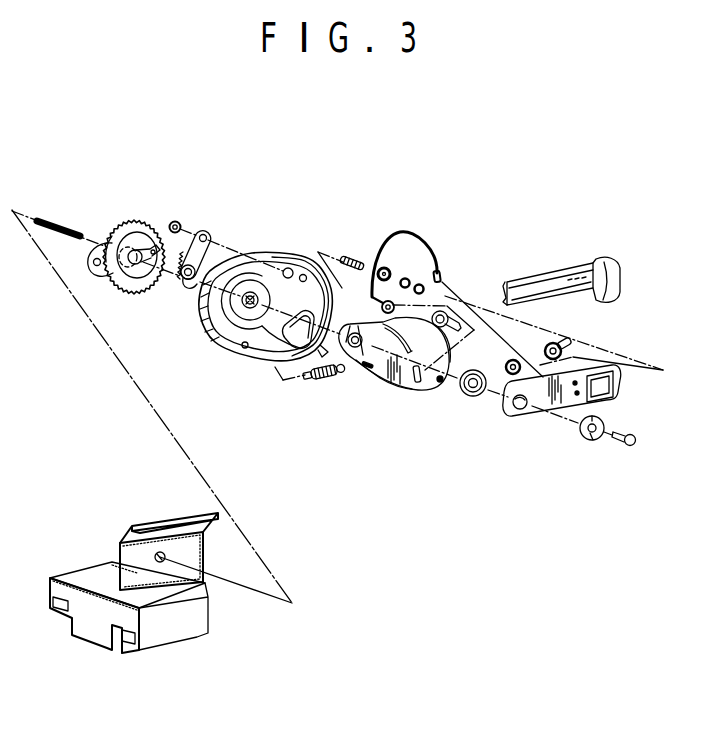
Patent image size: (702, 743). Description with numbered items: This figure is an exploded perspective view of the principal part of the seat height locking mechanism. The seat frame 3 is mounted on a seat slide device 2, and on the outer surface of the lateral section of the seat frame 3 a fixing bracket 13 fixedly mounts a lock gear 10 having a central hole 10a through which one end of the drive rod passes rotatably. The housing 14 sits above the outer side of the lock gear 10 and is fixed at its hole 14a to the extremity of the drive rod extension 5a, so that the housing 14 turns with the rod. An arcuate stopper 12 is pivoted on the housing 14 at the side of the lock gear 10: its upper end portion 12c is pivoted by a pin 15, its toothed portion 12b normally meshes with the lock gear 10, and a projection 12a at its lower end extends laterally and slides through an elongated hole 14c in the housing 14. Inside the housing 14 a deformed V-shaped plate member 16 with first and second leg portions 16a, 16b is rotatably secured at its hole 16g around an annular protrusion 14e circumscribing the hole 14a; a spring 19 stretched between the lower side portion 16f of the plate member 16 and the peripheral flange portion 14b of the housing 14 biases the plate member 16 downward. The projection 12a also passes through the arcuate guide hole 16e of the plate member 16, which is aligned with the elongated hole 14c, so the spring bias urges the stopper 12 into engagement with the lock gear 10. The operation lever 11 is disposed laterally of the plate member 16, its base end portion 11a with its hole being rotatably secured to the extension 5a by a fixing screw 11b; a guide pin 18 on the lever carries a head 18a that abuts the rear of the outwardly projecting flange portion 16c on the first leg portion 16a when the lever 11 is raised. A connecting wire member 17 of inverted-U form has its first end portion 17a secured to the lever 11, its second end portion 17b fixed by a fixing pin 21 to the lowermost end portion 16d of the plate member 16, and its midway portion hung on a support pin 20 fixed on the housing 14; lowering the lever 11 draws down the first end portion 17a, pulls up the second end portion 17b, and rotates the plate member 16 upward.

The seat slide device 2 is at (129, 623).
The seat frame 3 is at (169, 532).
The extension of the drive rod 5a is at (56, 203).
The lock gear 10 is at (119, 232).
The central hole 10a is at (132, 224).
The operation lever 11 is at (561, 269).
The base end portion 11a is at (560, 412).
The fixing screw 11b is at (605, 453).
The stopper 12 is at (190, 273).
The projection 12a is at (176, 321).
The toothed portion 12b is at (155, 293).
The upper end portion 12c is at (226, 223).
The fixing bracket 13 is at (97, 278).
The housing 14 is at (263, 298).
The hole 14a is at (295, 286).
The peripheral flange portion 14b is at (221, 336).
The elongated hole 14c is at (274, 361).
The annular protrusion 14e is at (252, 257).
The pin 15 is at (165, 199).
The plate member 16 is at (411, 395).
The first leg portion 16a is at (468, 344).
The second leg portion 16b is at (372, 403).
The flange portion 16c is at (371, 325).
The lowermost end portion 16d is at (463, 410).
The arcuate guide hole 16e is at (427, 398).
The lower side portion 16f is at (392, 396).
The hole 16g is at (346, 387).
The connecting wire member 17 is at (405, 254).
The first end portion 17a is at (454, 254).
The second end portion 17b is at (363, 293).
The guide pin 18 is at (565, 331).
The head 18a is at (594, 336).
The spring 19 is at (316, 396).
The support pin 20 is at (351, 238).
The fixing pin 21 is at (460, 297).